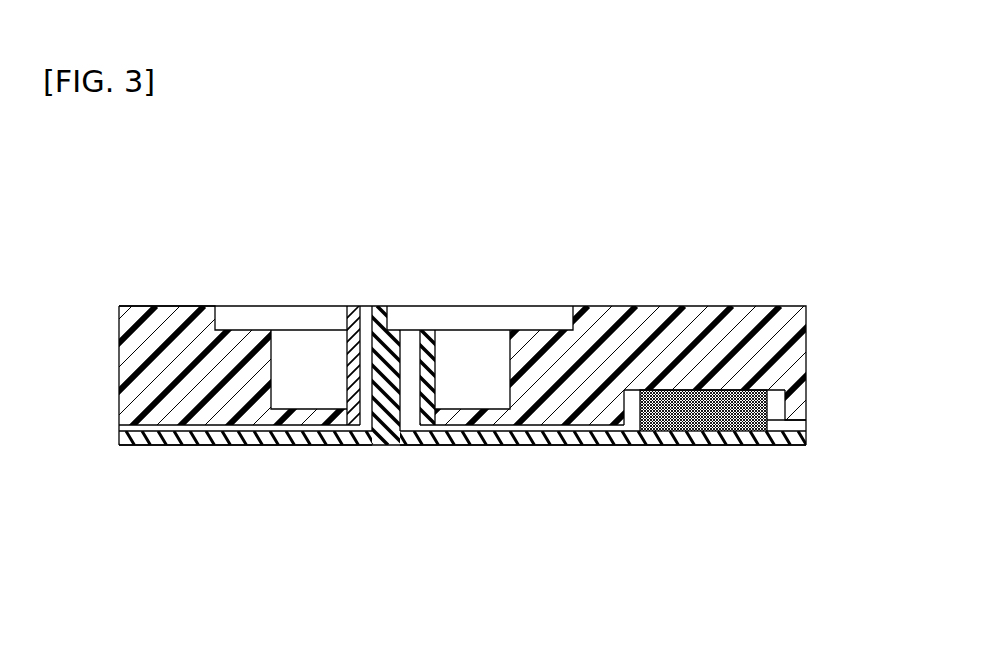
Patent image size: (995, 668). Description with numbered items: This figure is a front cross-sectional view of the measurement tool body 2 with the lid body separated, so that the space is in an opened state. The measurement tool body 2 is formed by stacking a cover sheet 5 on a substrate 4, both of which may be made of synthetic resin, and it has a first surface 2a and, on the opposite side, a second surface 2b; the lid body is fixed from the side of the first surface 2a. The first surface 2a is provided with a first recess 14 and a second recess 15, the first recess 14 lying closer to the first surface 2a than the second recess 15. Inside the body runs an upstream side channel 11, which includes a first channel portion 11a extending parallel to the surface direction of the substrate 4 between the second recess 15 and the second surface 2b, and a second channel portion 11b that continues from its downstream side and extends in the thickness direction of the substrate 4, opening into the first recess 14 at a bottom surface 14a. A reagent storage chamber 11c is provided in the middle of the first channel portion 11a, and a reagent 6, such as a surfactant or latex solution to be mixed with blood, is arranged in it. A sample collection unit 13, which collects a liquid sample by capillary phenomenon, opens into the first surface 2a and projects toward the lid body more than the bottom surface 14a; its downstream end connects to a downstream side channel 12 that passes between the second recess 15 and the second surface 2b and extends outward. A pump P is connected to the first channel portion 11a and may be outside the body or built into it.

The measurement tool body 2 is at (150, 197).
The first surface 2a is at (738, 303).
The second surface 2b is at (187, 447).
The substrate 4 is at (118, 362).
The cover sheet 5 is at (118, 437).
The reagent 6 is at (627, 413).
The upstream side channel 11 is at (501, 472).
The first channel portion 11a is at (528, 430).
The second channel portion 11b is at (378, 395).
The reagent storage chamber 11c is at (780, 400).
The downstream side channel 12 is at (263, 427).
The sample collection unit 13 is at (366, 385).
The first recess 14 is at (400, 315).
The bottom surface 14a is at (398, 328).
The second recess 15 is at (473, 363).
The pump P is at (807, 424).